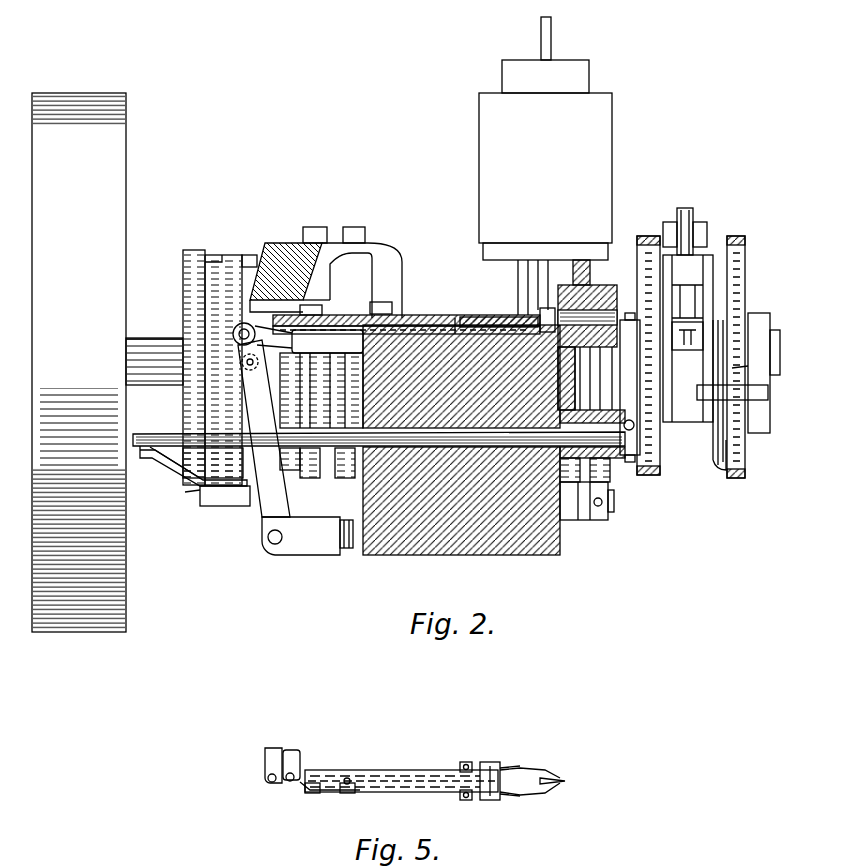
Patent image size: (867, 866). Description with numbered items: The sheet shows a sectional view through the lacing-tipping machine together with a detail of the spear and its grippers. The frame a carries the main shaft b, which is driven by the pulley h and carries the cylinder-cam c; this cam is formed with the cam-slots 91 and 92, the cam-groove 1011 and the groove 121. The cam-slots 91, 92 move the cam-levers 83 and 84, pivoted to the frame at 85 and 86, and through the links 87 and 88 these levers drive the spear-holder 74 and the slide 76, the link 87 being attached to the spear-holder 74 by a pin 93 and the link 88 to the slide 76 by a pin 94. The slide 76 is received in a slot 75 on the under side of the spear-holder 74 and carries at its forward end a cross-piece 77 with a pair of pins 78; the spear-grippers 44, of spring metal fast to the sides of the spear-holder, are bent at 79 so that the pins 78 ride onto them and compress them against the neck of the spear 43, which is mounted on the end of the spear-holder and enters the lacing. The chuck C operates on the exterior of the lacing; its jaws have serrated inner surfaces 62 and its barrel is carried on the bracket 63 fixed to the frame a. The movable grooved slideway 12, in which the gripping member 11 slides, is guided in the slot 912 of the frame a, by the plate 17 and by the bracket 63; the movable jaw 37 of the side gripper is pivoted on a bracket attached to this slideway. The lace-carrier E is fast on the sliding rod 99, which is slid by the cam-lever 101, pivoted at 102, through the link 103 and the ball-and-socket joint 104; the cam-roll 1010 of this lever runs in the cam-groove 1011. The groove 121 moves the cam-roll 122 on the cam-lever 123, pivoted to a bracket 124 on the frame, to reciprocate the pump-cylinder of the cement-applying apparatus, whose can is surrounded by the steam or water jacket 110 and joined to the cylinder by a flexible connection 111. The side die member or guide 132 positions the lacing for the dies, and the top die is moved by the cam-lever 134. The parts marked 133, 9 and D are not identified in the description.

In FIG. 2, the pulley h is at (112, 172).
In FIG. 2, the main shaft b is at (143, 346).
In FIG. 2, the link 87 is at (245, 317).
In FIG. 2, the cylinder-cam c is at (183, 290).
In FIG. 2, the cam-groove 1011 is at (201, 247).
In FIG. 2, the groove 121 is at (252, 262).
In FIG. 2, the cam-lever 83 is at (283, 282).
In FIG. 5, the cam-lever 83 is at (272, 748).
In FIG. 2, the cam-lever 84 is at (373, 246).
In FIG. 5, the cam-lever 84 is at (295, 752).
In FIG. 2, the pivot 85 is at (315, 232).
In FIG. 2, the pivot 86 is at (367, 232).
In FIG. 2, the link 88 is at (310, 310).
In FIG. 5, the link 88 is at (330, 792).
In FIG. 2, the pin 94 is at (382, 303).
In FIG. 5, the pin 94 is at (350, 787).
In FIG. 2, the slide 76 is at (412, 325).
In FIG. 5, the slide 76 is at (410, 772).
In FIG. 2, the spear-holder 74 is at (441, 324).
In FIG. 5, the spear-holder 74 is at (432, 791).
In FIG. 2, the slot 75 is at (452, 318).
In FIG. 5, the slot 75 is at (498, 766).
In FIG. 2, the slideway 12 is at (500, 318).
In FIG. 2, the plate 17 is at (538, 313).
In FIG. 2, the cam-lever 123 is at (272, 511).
In FIG. 2, the bracket 124 is at (286, 549).
In FIG. 2, the cam-roll 122 is at (215, 374).
In FIG. 2, the frame a is at (448, 523).
In FIG. 2, the link 103 is at (178, 436).
In FIG. 2, the cam-roll 1010 is at (188, 455).
In FIG. 2, the cam-lever 101 is at (200, 483).
In FIG. 2, the ball-and-socket joint 104 is at (190, 494).
In FIG. 2, the pivot 102 is at (232, 488).
In FIG. 2, the cam-slot 91 is at (310, 466).
In FIG. 2, the cam-slot 92 is at (342, 466).
In FIG. 2, the steam or water jacket 110 is at (590, 162).
In FIG. 2, the gripping member 11 is at (545, 302).
In FIG. 2, the flexible connection 111 is at (578, 262).
In FIG. 2, the bracket 63 is at (600, 290).
In FIG. 2, the chuck C is at (593, 349).
In FIG. 2, the slot 912 is at (545, 331).
In FIG. 2, the lace-carrier E is at (635, 431).
In FIG. 2, the sliding rod 99 is at (596, 440).
In FIG. 2, the cam-lever 134 is at (690, 211).
In FIG. 2, the housing 133 is at (695, 291).
In FIG. 2, the side die member 132 is at (692, 332).
In FIG. 2, the disk 9 is at (736, 237).
In FIG. 2, the inner surfaces 62 is at (752, 367).
In FIG. 5, the movable jaw 37 is at (292, 790).
In FIG. 5, the pin 93 is at (300, 792).
In FIG. 5, the head D is at (488, 782).
In FIG. 5, the pins 78 is at (462, 767).
In FIG. 5, the cross-piece 77 is at (466, 801).
In FIG. 5, the bend 79 is at (506, 769).
In FIG. 5, the spear-grippers 44 is at (526, 771).
In FIG. 5, the spear 43 is at (550, 779).